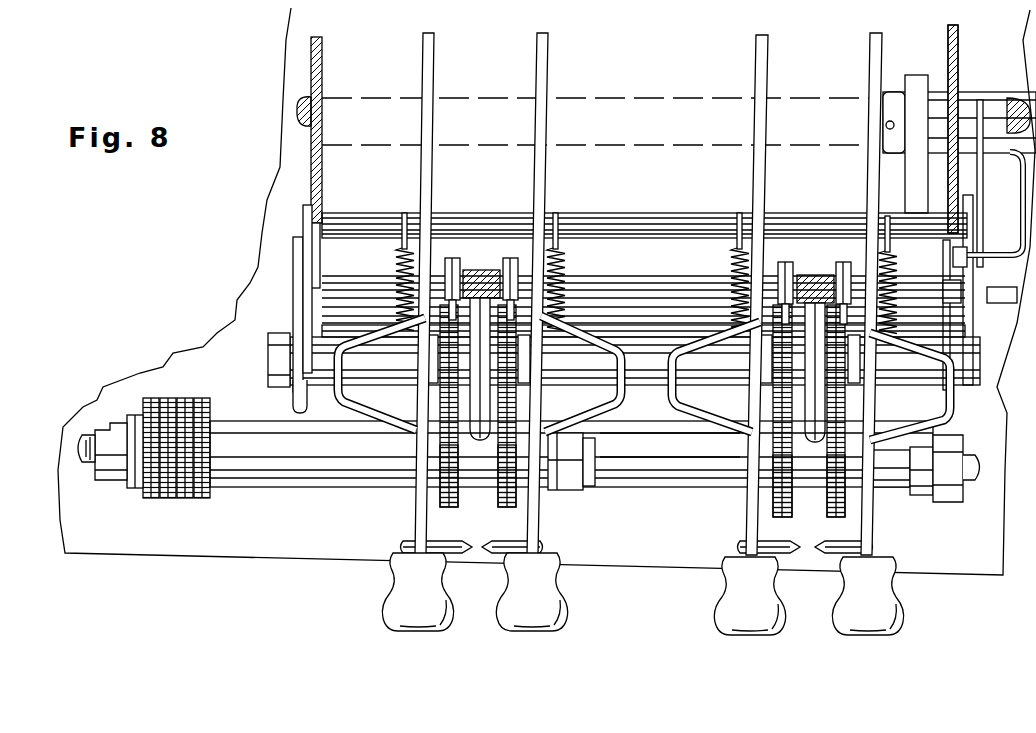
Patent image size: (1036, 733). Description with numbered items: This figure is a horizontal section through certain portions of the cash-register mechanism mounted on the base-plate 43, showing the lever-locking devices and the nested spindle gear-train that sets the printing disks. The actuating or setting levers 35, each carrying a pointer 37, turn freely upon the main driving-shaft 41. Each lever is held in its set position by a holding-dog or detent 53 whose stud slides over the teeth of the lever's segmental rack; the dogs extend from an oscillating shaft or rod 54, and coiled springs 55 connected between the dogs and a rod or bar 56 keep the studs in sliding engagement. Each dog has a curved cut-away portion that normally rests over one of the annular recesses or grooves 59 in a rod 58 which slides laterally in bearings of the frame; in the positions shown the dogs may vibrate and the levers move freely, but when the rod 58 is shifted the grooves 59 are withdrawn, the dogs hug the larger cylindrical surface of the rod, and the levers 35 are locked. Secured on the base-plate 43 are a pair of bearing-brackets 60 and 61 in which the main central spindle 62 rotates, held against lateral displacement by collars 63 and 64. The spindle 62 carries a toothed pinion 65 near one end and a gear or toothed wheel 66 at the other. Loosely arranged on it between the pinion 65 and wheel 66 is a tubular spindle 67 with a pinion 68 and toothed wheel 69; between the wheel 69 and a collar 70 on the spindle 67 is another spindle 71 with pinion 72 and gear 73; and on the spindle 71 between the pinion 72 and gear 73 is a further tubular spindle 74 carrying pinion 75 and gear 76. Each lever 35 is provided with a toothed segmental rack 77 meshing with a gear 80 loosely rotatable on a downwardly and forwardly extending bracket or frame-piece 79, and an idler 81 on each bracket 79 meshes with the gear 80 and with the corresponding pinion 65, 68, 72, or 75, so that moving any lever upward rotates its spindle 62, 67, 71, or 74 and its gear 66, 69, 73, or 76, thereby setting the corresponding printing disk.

The actuating or setting lever 35 is at (497, 628).
The pointer 37 is at (486, 560).
The main driving-shaft 41 is at (996, 105).
The base-plate 43 is at (262, 258).
The holding-dog or detent 53 is at (432, 348).
The oscillating shaft or rod 54 is at (336, 288).
The coiled spring 55 is at (394, 260).
The rod or bar 56 is at (644, 228).
The laterally sliding rod 58 is at (657, 384).
The annular recess or groove 59 is at (432, 380).
The bearing-bracket 60 is at (962, 500).
The bearing-bracket 61 is at (96, 481).
The main central spindle 62 is at (75, 446).
The collar 63 is at (920, 496).
The collar 64 is at (132, 489).
The toothed pinion 65 is at (838, 518).
The gear or toothed wheel 66 is at (150, 499).
The tubular spindle 67 is at (692, 488).
The pinion 68 is at (788, 518).
The toothed wheel 69 is at (170, 499).
The collar 70 is at (592, 488).
The spindle 71 is at (561, 492).
The toothed pinion 72 is at (507, 508).
The gear or toothed wheel 73 is at (188, 499).
The tubular spindle 74 is at (317, 488).
The pinion 75 is at (445, 508).
The toothed wheel or gear 76 is at (212, 494).
The toothed segmental rack 77 is at (452, 256).
The bracket or frame-piece 79 is at (480, 272).
The gear 80 is at (398, 311).
The idler 81 is at (441, 426).